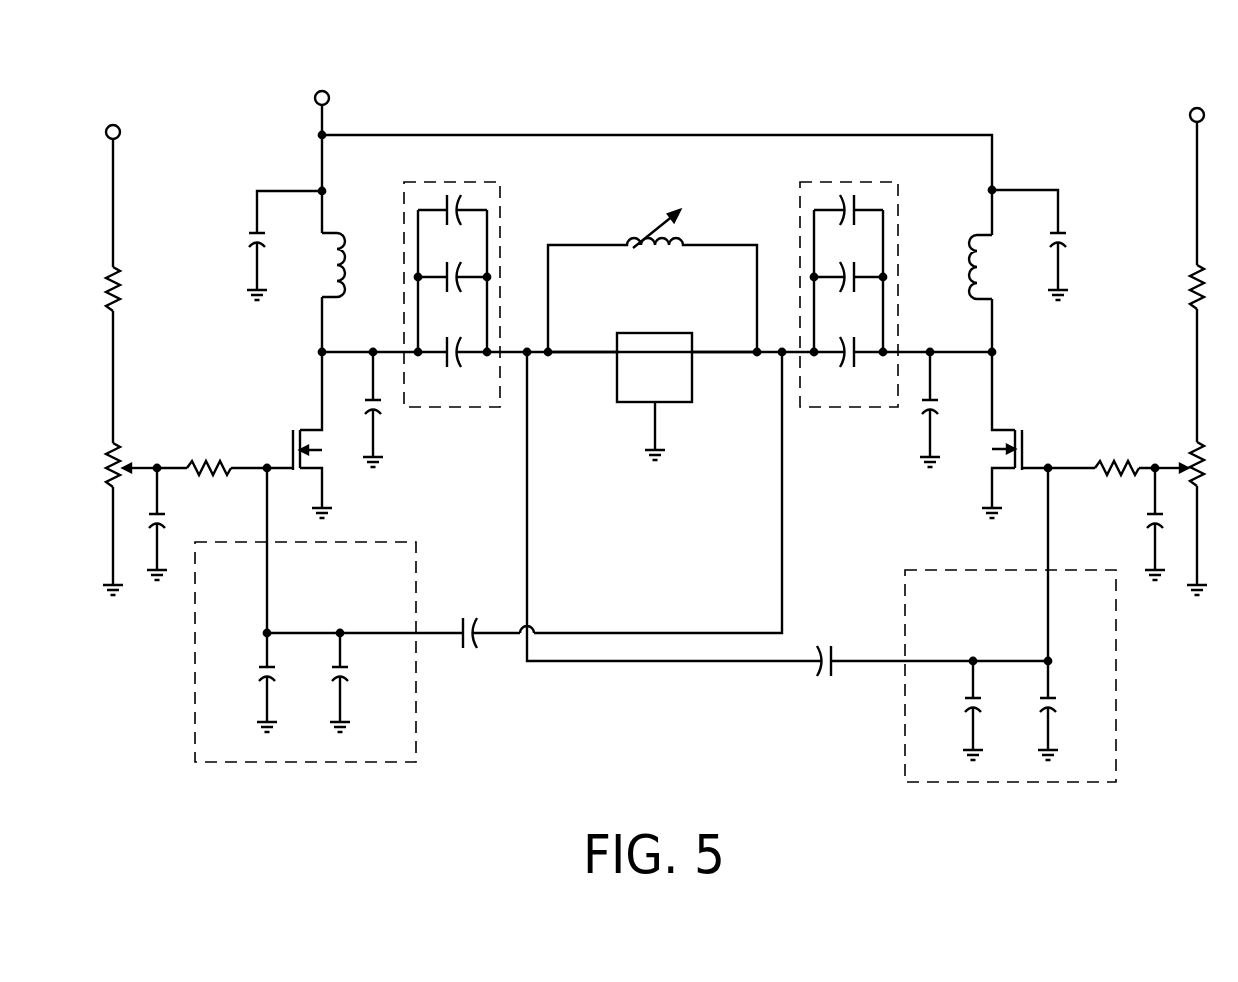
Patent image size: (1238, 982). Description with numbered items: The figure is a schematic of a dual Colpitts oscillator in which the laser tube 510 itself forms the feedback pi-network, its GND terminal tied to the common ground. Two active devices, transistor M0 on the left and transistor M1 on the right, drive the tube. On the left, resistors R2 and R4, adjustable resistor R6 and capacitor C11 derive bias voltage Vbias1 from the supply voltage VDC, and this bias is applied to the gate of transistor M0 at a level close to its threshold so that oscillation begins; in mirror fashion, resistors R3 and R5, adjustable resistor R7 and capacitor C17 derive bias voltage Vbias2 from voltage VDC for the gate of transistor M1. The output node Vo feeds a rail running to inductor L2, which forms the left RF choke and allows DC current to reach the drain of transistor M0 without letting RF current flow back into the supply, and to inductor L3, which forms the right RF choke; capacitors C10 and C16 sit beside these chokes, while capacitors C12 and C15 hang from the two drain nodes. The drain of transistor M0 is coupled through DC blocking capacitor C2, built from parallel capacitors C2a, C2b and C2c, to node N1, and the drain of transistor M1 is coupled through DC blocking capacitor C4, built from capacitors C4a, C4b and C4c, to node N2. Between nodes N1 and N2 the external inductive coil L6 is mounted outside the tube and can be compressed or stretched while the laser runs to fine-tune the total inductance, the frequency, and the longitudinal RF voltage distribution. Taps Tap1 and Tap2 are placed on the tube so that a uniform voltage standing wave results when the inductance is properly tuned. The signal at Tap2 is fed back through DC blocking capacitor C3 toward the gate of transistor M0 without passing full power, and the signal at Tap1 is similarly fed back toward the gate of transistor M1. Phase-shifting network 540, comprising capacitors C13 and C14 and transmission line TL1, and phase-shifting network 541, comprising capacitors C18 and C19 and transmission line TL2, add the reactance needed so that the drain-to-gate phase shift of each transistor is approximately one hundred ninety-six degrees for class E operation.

The voltage VDC is at (651, 109).
The output voltage Vo is at (318, 88).
The resistor R2 is at (129, 289).
The resistor R3 is at (1179, 287).
The resistor R4 is at (209, 484).
The resistor R5 is at (1117, 458).
The adjustable resistor R6 is at (118, 465).
The adjustable resistor R7 is at (1179, 458).
The capacitor C10 is at (262, 245).
The capacitor C11 is at (179, 524).
The capacitor C12 is at (392, 409).
The capacitor C13 is at (243, 682).
The capacitor C14 is at (362, 682).
The capacitor C15 is at (951, 409).
The capacitor C16 is at (1051, 245).
The capacitor C17 is at (1131, 524).
The capacitor C18 is at (952, 710).
The capacitor C19 is at (1070, 710).
The capacitor C2 is at (481, 294).
The capacitor C2a is at (452, 364).
The capacitor C2b is at (452, 289).
The capacitor C2c is at (452, 222).
The capacitor C4 is at (879, 441).
The capacitor C4a is at (846, 364).
The capacitor C4b is at (848, 288).
The capacitor C4c is at (848, 221).
The capacitor C3 is at (469, 645).
The inductor L2 is at (325, 265).
The inductor L3 is at (991, 267).
The external inductive coil L6 is at (652, 281).
The transistor M0 is at (308, 435).
The transistor M1 is at (1015, 435).
The bias voltage Vbias1 is at (257, 457).
The bias voltage Vbias2 is at (1062, 456).
The transmission line TL1 is at (268, 565).
The transmission line TL2 is at (1048, 604).
The node N1 is at (553, 356).
The node N2 is at (757, 356).
The tap Tap1 is at (612, 349).
The tap Tap2 is at (700, 348).
The ground GND is at (645, 316).
The laser tube 510 is at (654, 379).
The phase-shifting network 540 is at (416, 717).
The phase-shifting network 541 is at (905, 747).